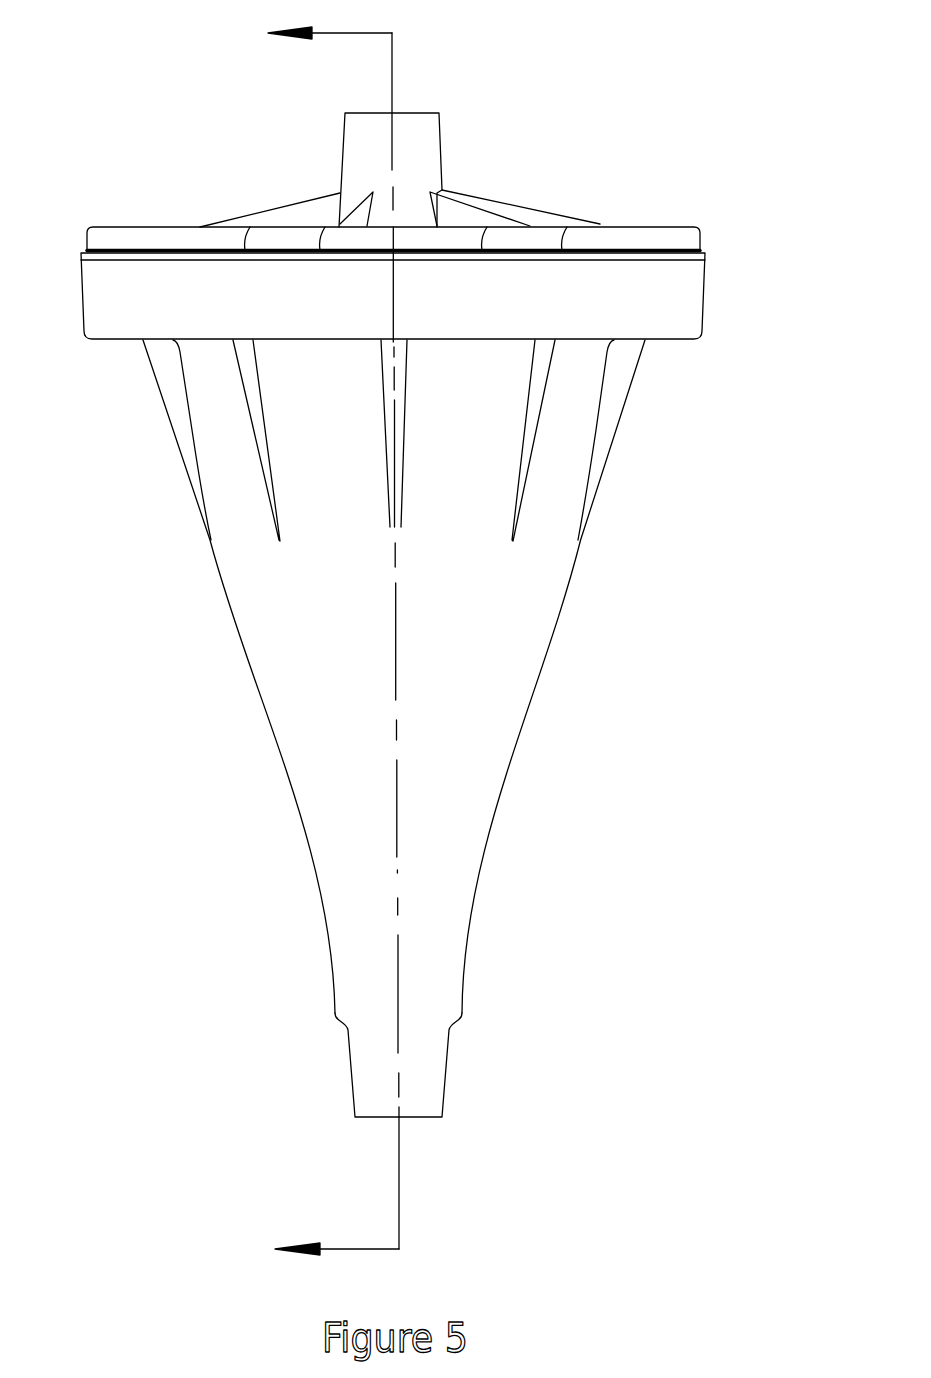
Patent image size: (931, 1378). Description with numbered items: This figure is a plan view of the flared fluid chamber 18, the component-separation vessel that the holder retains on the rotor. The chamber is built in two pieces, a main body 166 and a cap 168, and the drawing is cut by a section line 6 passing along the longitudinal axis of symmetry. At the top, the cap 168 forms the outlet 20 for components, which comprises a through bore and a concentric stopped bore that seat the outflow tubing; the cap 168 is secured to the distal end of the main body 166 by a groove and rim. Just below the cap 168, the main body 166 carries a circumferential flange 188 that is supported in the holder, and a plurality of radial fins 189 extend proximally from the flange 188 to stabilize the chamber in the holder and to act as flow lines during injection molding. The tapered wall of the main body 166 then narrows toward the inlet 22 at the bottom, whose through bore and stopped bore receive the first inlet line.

The section line 6- 6 is at (319, 644).
The fluid chamber 18 is at (557, 750).
The outlet 20 is at (442, 138).
The inlet 22 is at (445, 1073).
The main body 166 is at (307, 731).
The cap 168 is at (122, 241).
The circumferential flange 188 is at (705, 293).
The radial fins 189 is at (172, 448).